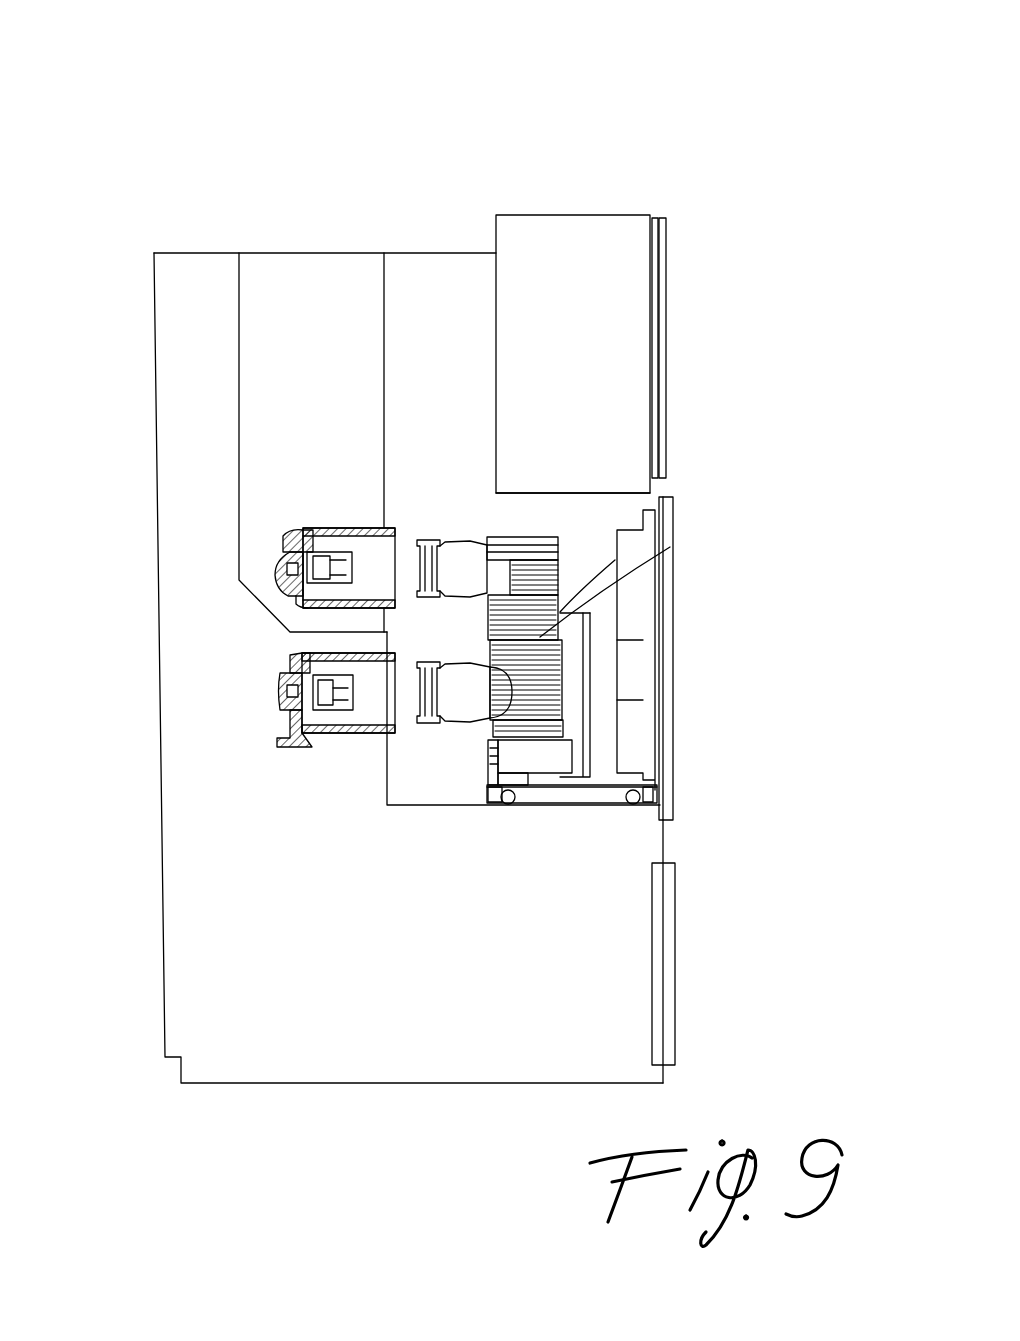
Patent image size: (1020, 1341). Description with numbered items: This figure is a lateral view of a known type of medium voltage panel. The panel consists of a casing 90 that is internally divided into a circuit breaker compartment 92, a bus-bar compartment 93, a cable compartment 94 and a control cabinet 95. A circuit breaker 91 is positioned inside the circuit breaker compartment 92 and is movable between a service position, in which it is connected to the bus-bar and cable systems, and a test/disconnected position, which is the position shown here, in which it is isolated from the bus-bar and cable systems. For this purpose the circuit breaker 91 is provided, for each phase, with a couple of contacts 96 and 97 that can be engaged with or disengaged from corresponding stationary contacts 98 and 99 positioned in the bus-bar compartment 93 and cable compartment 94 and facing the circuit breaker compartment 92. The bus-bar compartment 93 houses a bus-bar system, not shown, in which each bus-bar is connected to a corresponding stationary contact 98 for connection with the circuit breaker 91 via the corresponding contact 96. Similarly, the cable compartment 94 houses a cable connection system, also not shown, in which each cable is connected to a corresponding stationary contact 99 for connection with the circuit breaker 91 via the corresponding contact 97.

The casing 90 is at (347, 96).
The circuit breaker 91 is at (670, 547).
The circuit breaker compartment 92 is at (445, 312).
The bus-bar compartment 93 is at (283, 315).
The cable compartment 94 is at (273, 1002).
The control cabinet 95 is at (623, 246).
The contact 96 is at (440, 545).
The contact 97 is at (437, 693).
The stationary contact 98 is at (300, 530).
The stationary contact 99 is at (277, 698).